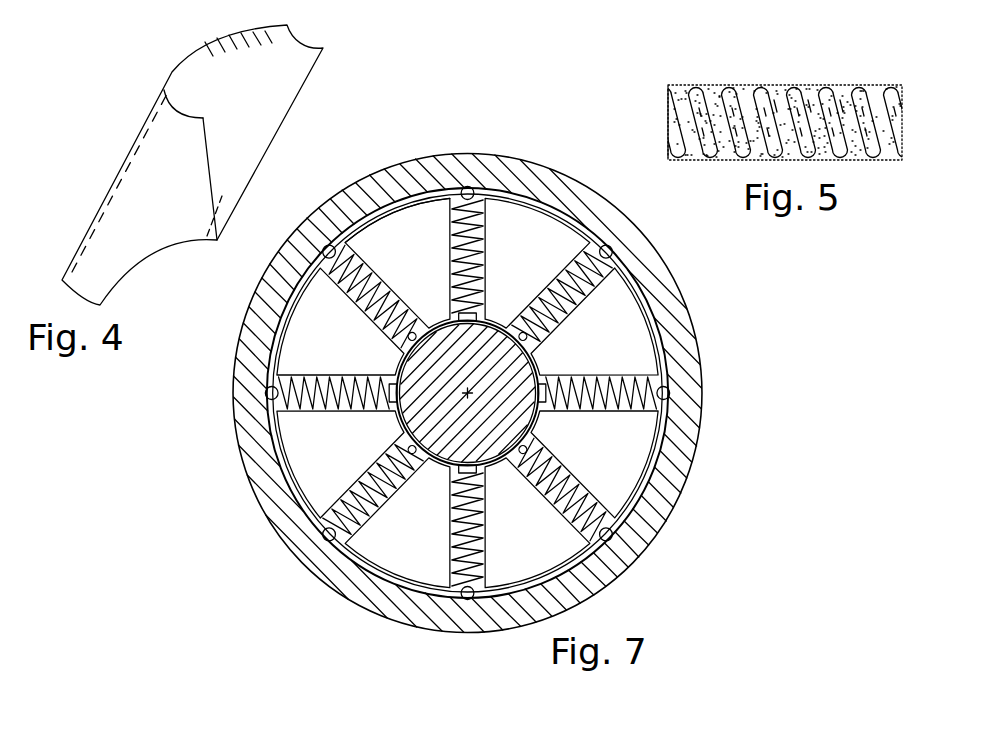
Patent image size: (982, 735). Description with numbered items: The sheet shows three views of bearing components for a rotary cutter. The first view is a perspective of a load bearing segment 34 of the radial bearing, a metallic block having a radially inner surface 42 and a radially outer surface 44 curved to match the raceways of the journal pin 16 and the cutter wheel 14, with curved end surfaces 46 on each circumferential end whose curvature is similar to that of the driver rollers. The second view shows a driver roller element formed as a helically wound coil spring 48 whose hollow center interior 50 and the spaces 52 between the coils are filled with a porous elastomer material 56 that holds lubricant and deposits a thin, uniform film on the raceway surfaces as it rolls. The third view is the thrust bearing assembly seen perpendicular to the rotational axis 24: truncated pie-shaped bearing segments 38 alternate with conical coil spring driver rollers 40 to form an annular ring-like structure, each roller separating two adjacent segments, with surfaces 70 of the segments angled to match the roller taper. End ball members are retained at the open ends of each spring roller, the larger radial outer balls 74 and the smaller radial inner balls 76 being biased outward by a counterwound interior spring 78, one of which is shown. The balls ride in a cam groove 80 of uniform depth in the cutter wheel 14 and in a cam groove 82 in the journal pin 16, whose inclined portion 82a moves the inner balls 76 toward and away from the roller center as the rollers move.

In FIG. 7, the cutter wheel 14 is at (581, 186).
In FIG. 7, the journal pin 16 is at (484, 367).
In FIG. 7, the rotational axis 24 is at (467, 398).
In FIG. 4, the load bearing segment 34 is at (167, 53).
In FIG. 7, the bearing segment 38 is at (417, 251).
In FIG. 7, the driver roller 40 is at (474, 278).
In FIG. 4, the radially inner surface 42 is at (263, 114).
In FIG. 4, the radially outer surface 44 is at (172, 72).
In FIG. 4, the curved end surface 46 is at (153, 153).
In FIG. 5, the helically wound coil spring 48 is at (725, 92).
In FIG. 5, the hollow center interior 50 is at (667, 127).
In FIG. 5, the spaces between coils 52 is at (825, 80).
In FIG. 5, the elastomer material 56 is at (812, 98).
In FIG. 7, the surface of bearing segment 70 is at (418, 212).
In FIG. 7, the radial outer ball 74 is at (472, 190).
In FIG. 7, the radial inner ball 76 is at (456, 333).
In FIG. 7, the counterwound interior spring 78 is at (378, 503).
In FIG. 7, the cam groove 80 is at (265, 431).
In FIG. 7, the cam groove 82 is at (400, 360).
In FIG. 7, the inclined portion 82a is at (420, 443).